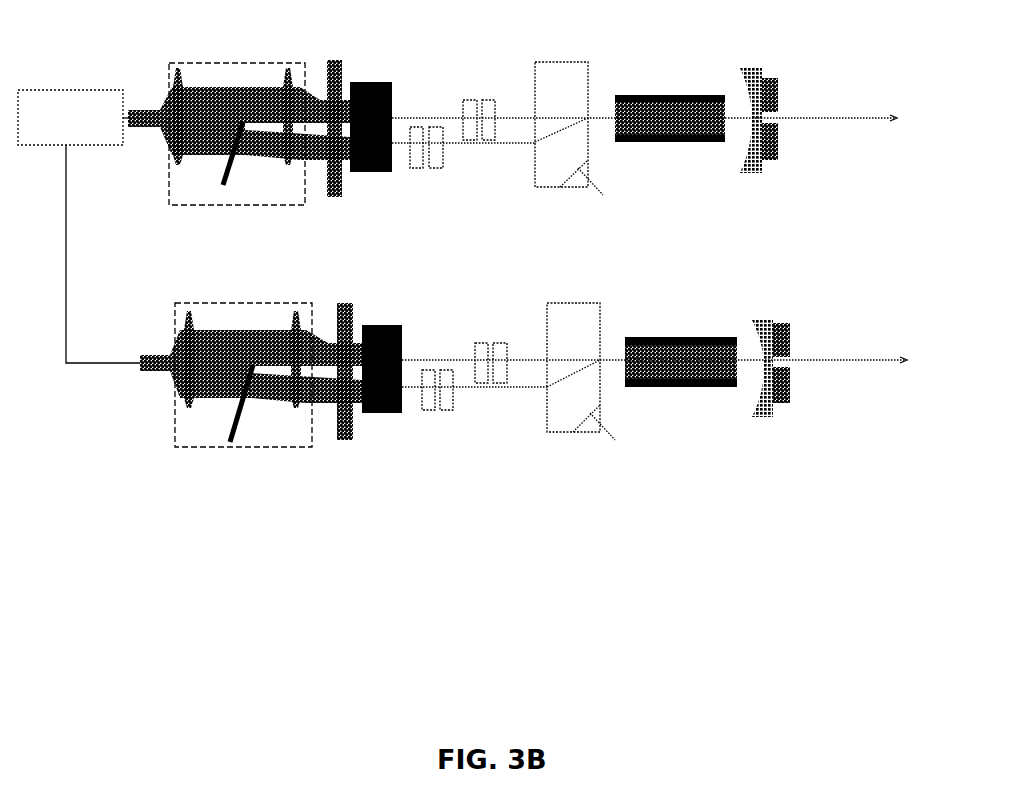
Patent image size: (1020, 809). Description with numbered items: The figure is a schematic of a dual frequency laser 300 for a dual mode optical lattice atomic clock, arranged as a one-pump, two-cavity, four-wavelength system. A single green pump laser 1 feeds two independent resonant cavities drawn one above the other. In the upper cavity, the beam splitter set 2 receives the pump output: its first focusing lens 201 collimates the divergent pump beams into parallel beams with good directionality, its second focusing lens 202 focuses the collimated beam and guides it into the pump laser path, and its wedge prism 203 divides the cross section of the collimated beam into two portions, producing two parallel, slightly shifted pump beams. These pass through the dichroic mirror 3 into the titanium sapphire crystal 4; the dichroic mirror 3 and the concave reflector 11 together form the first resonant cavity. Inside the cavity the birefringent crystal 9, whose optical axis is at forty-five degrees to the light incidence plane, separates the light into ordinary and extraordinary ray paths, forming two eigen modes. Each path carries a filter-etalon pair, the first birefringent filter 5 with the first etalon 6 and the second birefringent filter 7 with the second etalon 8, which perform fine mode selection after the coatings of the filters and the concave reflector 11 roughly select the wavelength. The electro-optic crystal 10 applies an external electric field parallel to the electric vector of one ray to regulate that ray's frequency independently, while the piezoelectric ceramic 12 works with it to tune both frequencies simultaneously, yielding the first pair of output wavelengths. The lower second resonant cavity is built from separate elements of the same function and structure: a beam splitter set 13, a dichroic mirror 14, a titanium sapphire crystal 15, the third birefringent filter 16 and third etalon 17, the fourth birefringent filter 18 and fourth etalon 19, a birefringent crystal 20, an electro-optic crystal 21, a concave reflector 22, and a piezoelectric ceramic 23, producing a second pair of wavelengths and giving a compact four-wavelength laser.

The dual frequency laser 300 is at (96, 23).
The 532 nm pump laser 1 is at (48, 146).
The beam splitter set 2 is at (239, 118).
The first focusing lens 201 is at (178, 158).
The second focusing lens 202 is at (290, 158).
The wedge prism 203 is at (228, 160).
The dichroic mirror 3 is at (335, 60).
The titanium sapphire crystal 4 is at (360, 82).
The first birefringent filter 5 is at (416, 127).
The first etalon 6 is at (470, 100).
The second birefringent filter 7 is at (437, 168).
The second etalon 8 is at (488, 140).
The birefringent crystal 9 is at (560, 62).
The electro-optic crystal 10 is at (615, 130).
The concave reflector 11 is at (745, 68).
The piezoelectric ceramic 12 is at (768, 160).
The beam splitter set 13 is at (215, 310).
The dichroic mirror 14 is at (345, 303).
The titanium sapphire crystal 15 is at (378, 325).
The third birefringent filter 16 is at (428, 370).
The third etalon 17 is at (482, 343).
The fourth birefringent filter 18 is at (447, 410).
The fourth etalon 19 is at (500, 383).
The birefringent crystal 20 is at (572, 303).
The electro-optic crystal 21 is at (627, 375).
The concave reflector 22 is at (760, 320).
The piezoelectric ceramic 23 is at (790, 403).